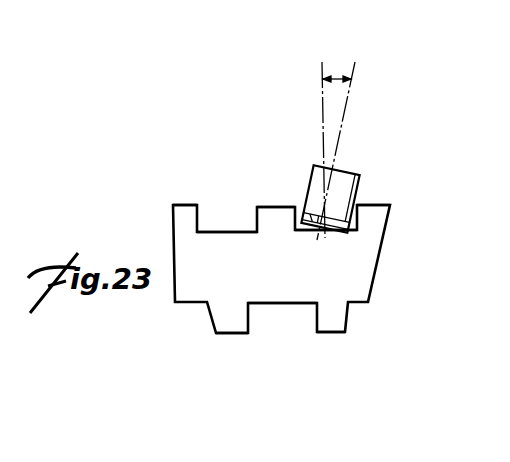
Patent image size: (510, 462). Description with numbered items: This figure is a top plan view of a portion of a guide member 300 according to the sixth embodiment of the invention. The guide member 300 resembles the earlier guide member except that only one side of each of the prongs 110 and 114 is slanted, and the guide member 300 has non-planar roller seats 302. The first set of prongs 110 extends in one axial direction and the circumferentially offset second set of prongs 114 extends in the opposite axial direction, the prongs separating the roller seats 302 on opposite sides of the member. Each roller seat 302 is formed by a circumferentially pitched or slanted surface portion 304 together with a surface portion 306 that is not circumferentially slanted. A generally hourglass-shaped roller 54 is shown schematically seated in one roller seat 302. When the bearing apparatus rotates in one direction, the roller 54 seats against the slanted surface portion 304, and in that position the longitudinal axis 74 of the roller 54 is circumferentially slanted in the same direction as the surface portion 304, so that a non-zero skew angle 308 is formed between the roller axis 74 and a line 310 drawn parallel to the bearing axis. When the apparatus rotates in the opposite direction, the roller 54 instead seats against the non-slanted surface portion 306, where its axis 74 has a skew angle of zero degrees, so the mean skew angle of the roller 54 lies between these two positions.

The guide member 300 is at (405, 144).
The roller 54 is at (313, 173).
The longitudinal axis 74 is at (352, 77).
The line parallel to the bearing axis 310 is at (327, 72).
The skew angle 308 is at (340, 79).
The prongs or stubs 110 is at (202, 205).
The roller seat 302 is at (243, 229).
The slanted surface portion 304 is at (303, 306).
The non-slanted surface portion 306 is at (262, 305).
The prongs or stubs 114 is at (330, 333).